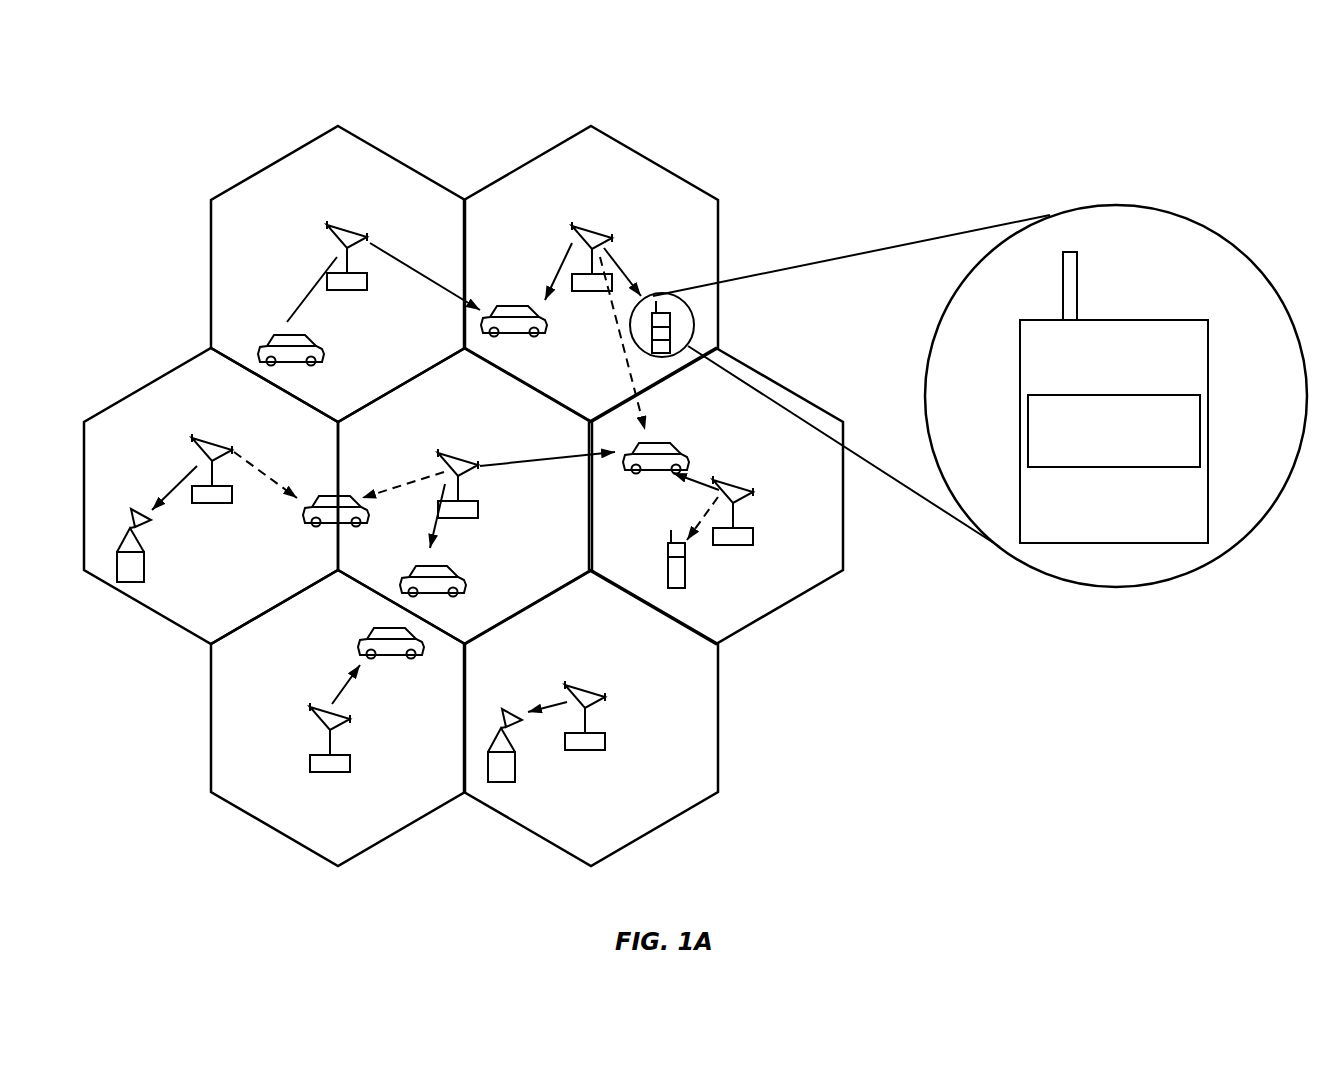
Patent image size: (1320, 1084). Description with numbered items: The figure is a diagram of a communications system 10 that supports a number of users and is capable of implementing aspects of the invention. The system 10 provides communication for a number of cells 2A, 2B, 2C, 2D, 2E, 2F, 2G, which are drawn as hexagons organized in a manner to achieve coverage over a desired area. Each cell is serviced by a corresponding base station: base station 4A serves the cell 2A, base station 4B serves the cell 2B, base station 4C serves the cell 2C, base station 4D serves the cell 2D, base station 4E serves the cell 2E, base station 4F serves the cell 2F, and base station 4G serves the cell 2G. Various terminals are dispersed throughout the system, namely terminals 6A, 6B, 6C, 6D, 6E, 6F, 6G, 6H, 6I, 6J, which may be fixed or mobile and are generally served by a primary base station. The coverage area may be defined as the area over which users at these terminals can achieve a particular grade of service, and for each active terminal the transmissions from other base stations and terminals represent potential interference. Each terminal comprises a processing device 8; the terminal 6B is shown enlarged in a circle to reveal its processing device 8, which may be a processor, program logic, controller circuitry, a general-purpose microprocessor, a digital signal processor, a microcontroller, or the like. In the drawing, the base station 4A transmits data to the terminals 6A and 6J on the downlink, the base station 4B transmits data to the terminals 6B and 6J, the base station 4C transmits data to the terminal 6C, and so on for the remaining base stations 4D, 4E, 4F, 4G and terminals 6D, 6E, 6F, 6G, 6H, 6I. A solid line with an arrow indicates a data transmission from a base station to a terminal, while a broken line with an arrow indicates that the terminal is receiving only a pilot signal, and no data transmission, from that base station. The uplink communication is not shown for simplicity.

The communications system 10 is at (222, 92).
The cell 2A is at (277, 161).
The cell 2B is at (652, 161).
The cell 2C is at (150, 378).
The cell 2D is at (486, 406).
The cell 2E is at (780, 612).
The cell 2F is at (276, 836).
The cell 2G is at (527, 836).
The base station 4A is at (352, 226).
The base station 4B is at (592, 232).
The base station 4C is at (215, 446).
The base station 4D is at (462, 460).
The base station 4E is at (740, 485).
The base station 4F is at (340, 714).
The base station 4G is at (590, 690).
The terminal 6A is at (310, 338).
The terminal 6B is at (697, 330).
The terminal 6C is at (150, 568).
The terminal 6D is at (462, 578).
The terminal 6E is at (676, 450).
The terminal 6F is at (358, 640).
The terminal 6G is at (520, 768).
The terminal 6H is at (327, 525).
The terminal 6I is at (686, 573).
The terminal 6J is at (530, 312).
The processing device 8 is at (1200, 432).